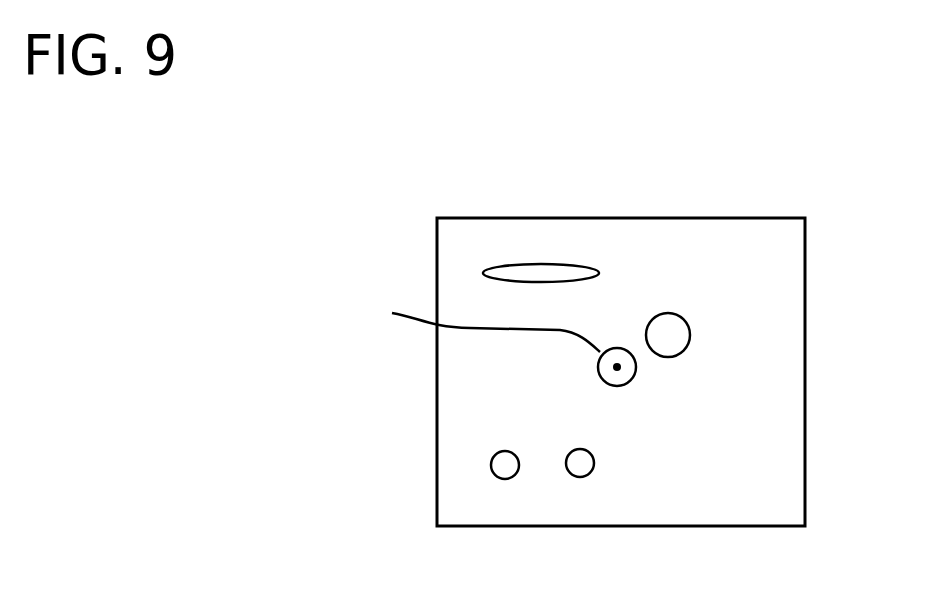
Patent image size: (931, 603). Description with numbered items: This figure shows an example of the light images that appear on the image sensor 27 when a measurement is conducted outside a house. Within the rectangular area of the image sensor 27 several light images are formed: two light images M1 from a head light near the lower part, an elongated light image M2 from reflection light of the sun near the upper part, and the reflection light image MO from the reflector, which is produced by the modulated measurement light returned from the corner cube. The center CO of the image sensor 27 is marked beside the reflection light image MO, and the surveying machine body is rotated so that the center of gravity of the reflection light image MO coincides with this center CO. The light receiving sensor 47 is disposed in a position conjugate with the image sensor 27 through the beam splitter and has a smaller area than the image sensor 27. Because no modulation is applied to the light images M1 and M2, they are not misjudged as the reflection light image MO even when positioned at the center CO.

The image sensor 27 is at (748, 237).
The light image from reflection light of sun M2 is at (536, 247).
The reflection light image MO is at (675, 333).
The center of the image sensor CO is at (620, 368).
The light receiving sensor 47 is at (467, 323).
The light image from head light M1 is at (566, 480).